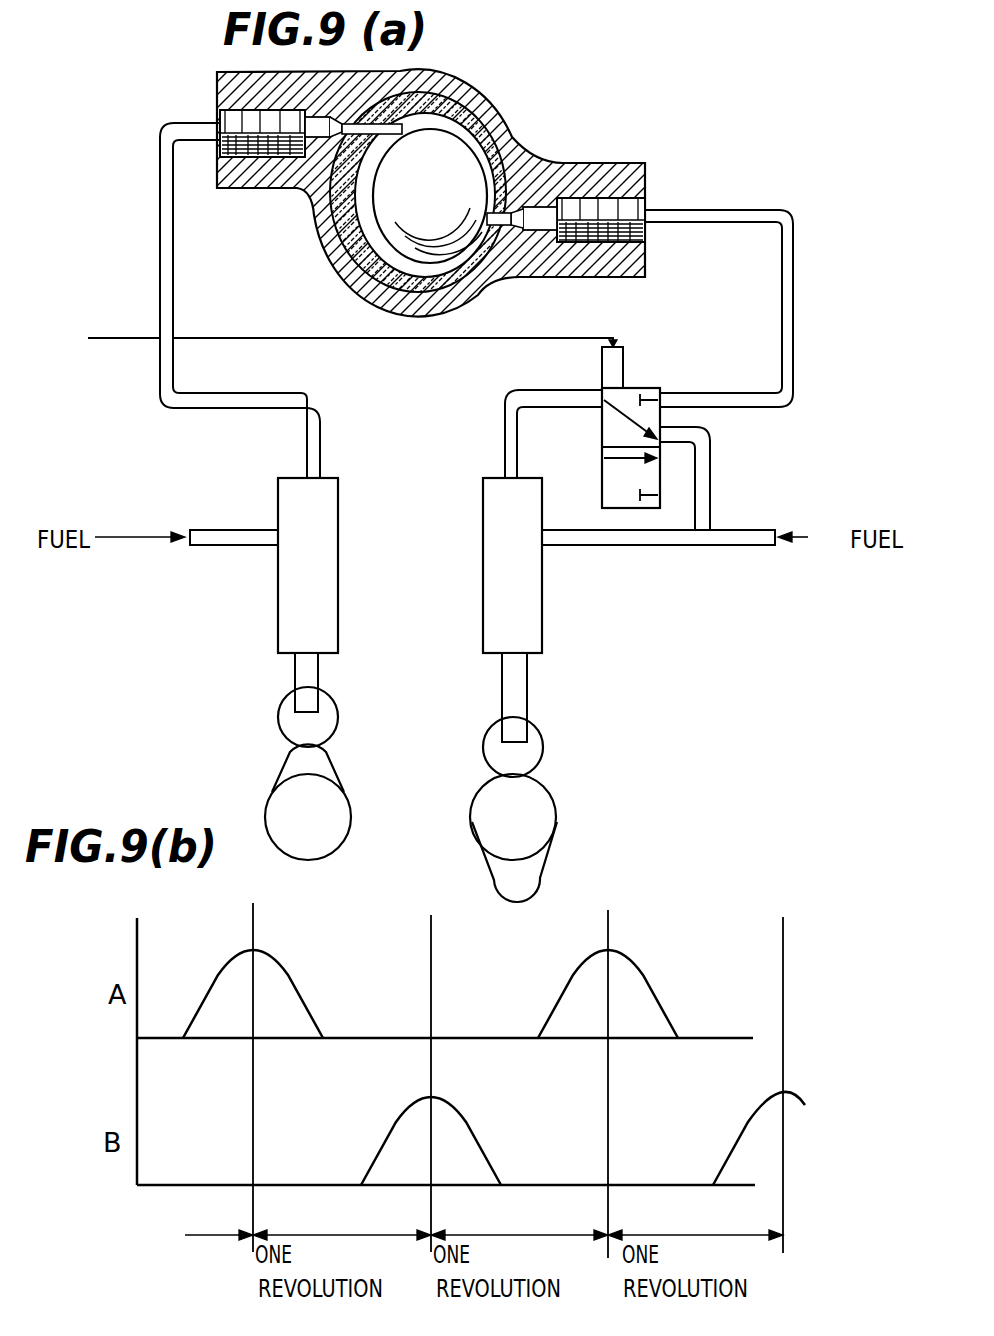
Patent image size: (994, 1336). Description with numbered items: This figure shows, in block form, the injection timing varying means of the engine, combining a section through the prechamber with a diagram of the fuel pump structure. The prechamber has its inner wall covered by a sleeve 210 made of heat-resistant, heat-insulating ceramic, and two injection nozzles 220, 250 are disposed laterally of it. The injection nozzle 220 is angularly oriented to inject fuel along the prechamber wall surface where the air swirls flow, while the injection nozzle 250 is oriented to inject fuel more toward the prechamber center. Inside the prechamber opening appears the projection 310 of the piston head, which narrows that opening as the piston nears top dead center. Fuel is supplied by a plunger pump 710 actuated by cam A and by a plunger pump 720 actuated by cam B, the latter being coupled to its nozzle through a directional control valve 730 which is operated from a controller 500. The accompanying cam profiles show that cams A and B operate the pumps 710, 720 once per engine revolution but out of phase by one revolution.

The sleeve 210 is at (500, 108).
The injection nozzle 220 is at (218, 112).
The injection nozzle 250 is at (647, 232).
The projection 310 is at (424, 191).
The controller 500 is at (352, 317).
The plunger pump 710 is at (318, 523).
The plunger pump 720 is at (497, 532).
The directional control valve 730 is at (598, 458).